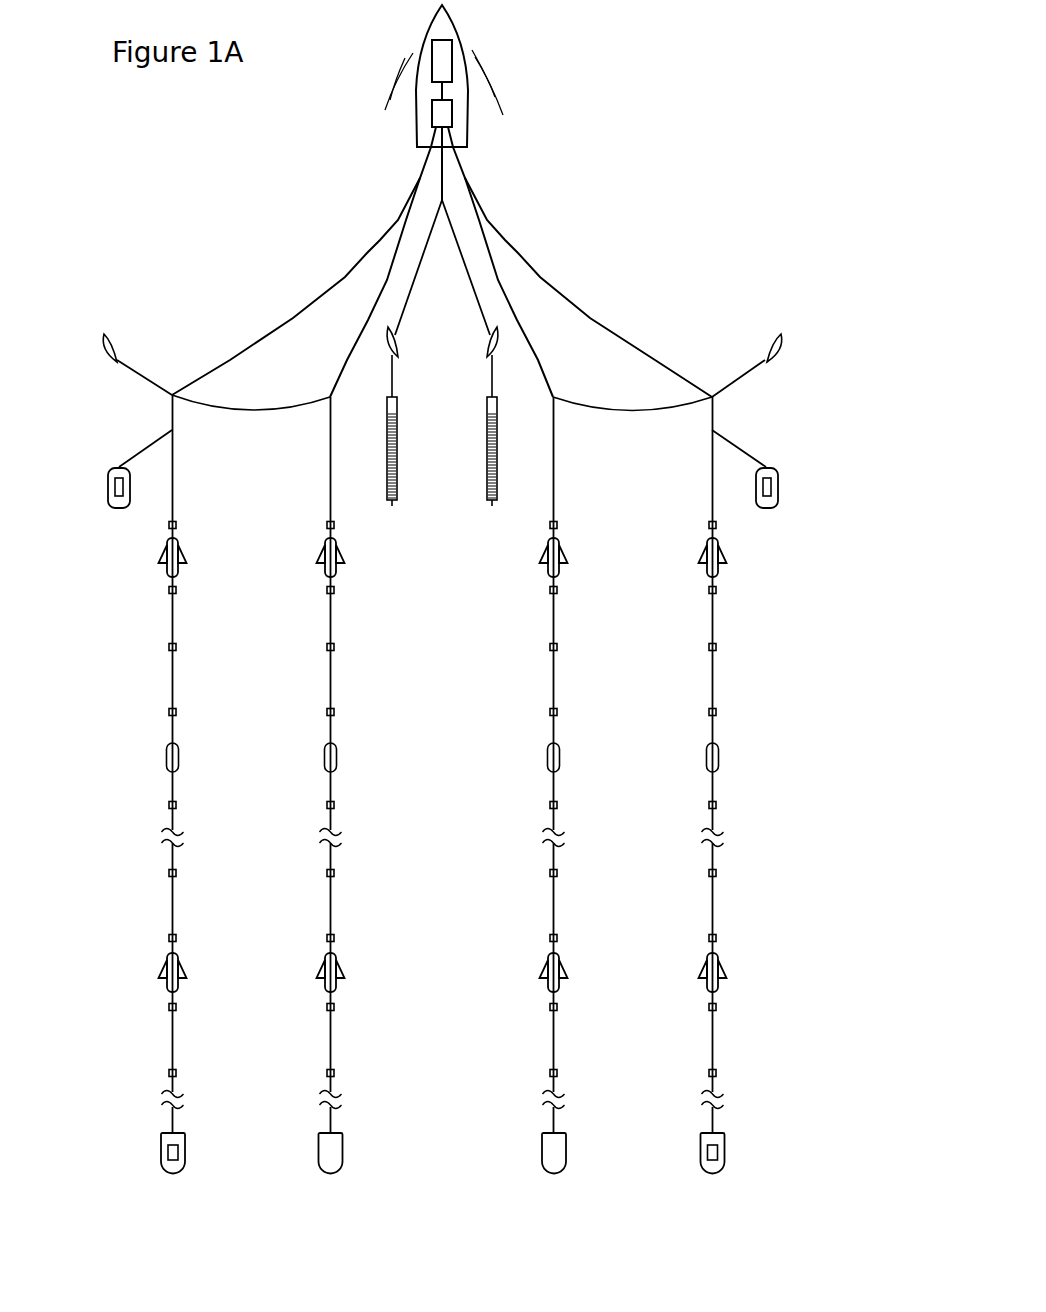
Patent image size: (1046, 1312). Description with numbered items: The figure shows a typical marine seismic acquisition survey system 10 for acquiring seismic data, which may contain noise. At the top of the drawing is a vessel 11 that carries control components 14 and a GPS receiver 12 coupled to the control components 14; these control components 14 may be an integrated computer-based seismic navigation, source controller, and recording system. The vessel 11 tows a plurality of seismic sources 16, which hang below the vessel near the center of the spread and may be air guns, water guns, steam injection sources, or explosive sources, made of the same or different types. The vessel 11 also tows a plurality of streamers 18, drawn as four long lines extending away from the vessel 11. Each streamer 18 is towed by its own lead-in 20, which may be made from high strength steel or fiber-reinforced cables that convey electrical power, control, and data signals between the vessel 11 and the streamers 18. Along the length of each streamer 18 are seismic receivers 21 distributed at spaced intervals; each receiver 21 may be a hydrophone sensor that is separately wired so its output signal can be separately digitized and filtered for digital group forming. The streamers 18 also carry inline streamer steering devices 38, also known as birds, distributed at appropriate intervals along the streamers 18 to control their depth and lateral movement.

The marine seismic acquisition survey system 10 is at (642, 98).
The vessel 11 is at (428, 20).
The GPS receiver 12 is at (453, 48).
The control components 14 is at (432, 113).
The seismic sources 16 is at (392, 506).
The streamers 18 is at (170, 688).
The lead-ins 20 is at (398, 247).
The seismic receivers 21 is at (337, 712).
The inline streamer steering devices 38 is at (165, 576).